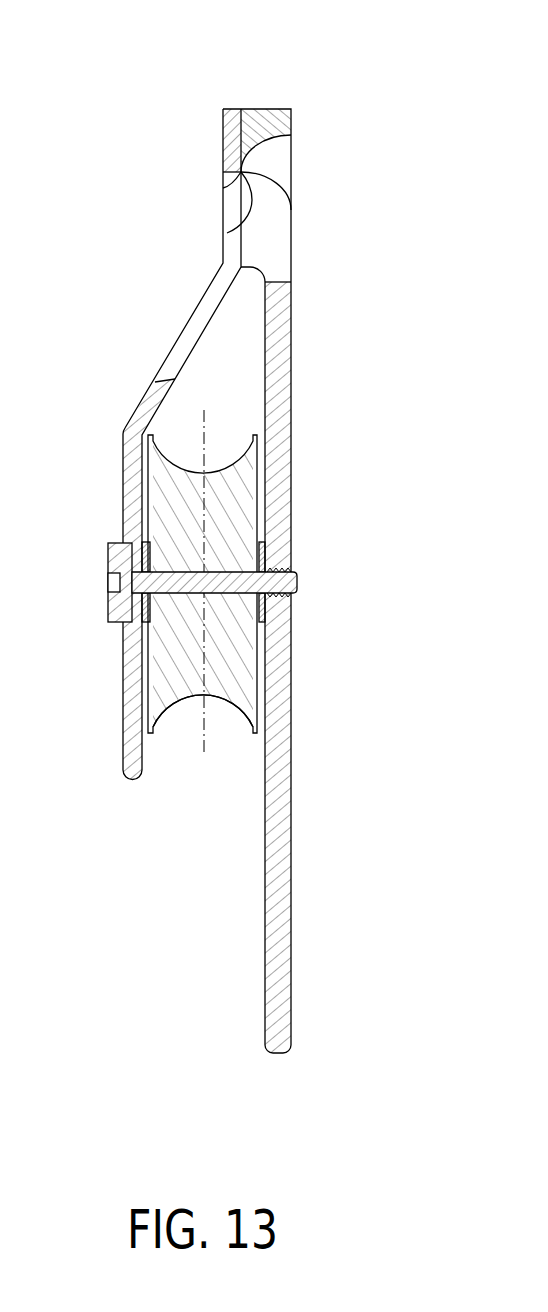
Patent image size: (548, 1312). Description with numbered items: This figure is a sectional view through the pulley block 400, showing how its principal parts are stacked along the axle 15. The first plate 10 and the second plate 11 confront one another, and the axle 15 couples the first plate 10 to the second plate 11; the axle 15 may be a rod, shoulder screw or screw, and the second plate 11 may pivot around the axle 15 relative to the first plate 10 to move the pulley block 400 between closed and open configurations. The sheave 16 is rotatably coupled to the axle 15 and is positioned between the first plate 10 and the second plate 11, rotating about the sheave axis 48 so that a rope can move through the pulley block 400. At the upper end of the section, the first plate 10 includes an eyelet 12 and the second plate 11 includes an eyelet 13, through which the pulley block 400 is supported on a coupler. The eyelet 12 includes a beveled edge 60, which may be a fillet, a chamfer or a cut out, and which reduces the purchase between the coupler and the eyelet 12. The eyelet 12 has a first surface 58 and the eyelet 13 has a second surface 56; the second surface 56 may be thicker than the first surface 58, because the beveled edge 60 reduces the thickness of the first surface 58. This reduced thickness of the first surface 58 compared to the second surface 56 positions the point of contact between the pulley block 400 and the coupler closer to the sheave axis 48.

The pulley block 400 is at (132, 103).
The first plate 10 is at (280, 793).
The second plate 11 is at (133, 418).
The eyelet 12 is at (267, 237).
The eyelet 13 is at (235, 205).
The axle 15 is at (277, 580).
The sheave 16 is at (167, 690).
The sheave axis 48 is at (203, 727).
The second surface 56 is at (223, 188).
The first surface 58 is at (227, 233).
The beveled edge 60 is at (258, 147).